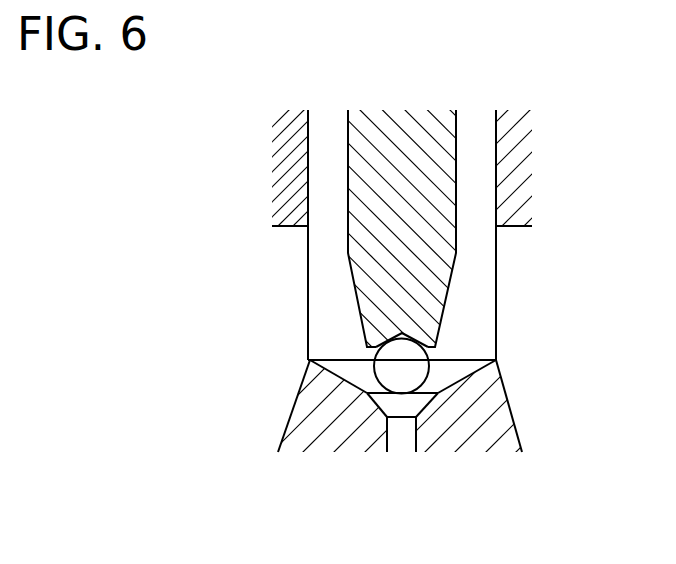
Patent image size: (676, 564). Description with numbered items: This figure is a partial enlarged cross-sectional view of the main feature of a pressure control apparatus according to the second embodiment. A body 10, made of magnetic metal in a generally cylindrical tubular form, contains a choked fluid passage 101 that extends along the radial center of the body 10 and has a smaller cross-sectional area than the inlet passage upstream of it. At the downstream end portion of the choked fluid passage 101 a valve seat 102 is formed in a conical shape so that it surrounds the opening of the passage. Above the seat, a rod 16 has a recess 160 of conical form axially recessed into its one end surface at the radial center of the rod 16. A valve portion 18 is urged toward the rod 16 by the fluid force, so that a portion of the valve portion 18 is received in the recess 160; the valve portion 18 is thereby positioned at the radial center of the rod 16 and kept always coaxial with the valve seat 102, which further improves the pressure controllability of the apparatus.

The body 10 is at (331, 435).
The rod 16 is at (416, 127).
The valve portion 18 is at (410, 358).
The recess 160 is at (406, 332).
The choked fluid passage 101 is at (403, 435).
The valve seat 102 is at (432, 403).